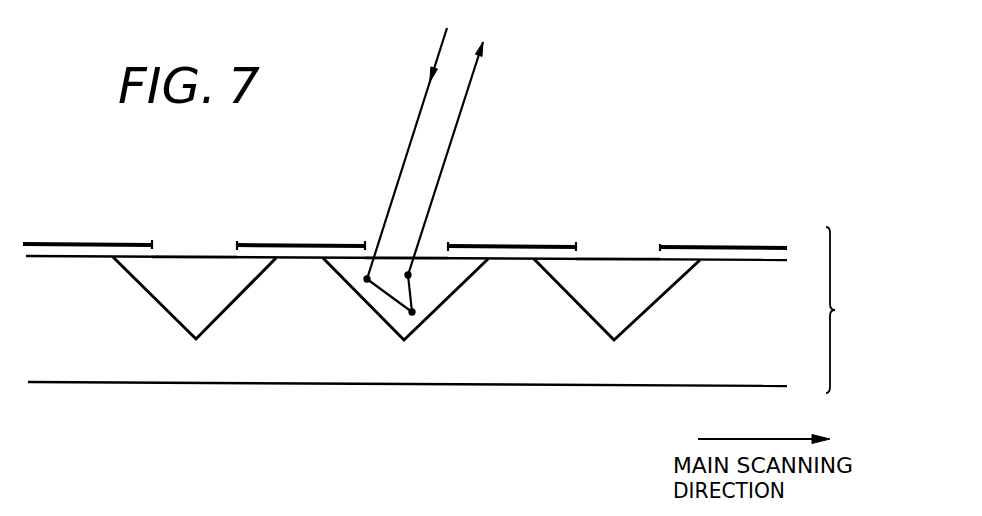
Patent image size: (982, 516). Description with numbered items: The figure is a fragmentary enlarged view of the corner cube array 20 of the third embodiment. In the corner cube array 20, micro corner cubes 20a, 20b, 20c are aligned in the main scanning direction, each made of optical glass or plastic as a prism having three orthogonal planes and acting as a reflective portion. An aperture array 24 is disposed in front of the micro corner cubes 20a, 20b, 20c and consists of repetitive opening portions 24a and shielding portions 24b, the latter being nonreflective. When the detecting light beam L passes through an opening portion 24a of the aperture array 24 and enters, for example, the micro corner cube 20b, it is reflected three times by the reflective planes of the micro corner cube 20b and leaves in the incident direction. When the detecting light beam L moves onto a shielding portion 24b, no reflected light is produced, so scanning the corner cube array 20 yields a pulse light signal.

The detecting light beam L is at (423, 168).
The corner cube array 20 is at (448, 310).
The micro corner cube 20a is at (168, 312).
The micro corner cube 20b is at (368, 303).
The micro corner cube 20c is at (577, 302).
The aperture array 24 is at (422, 250).
The opening portion 24a is at (197, 248).
The shielding portion 24b is at (124, 243).